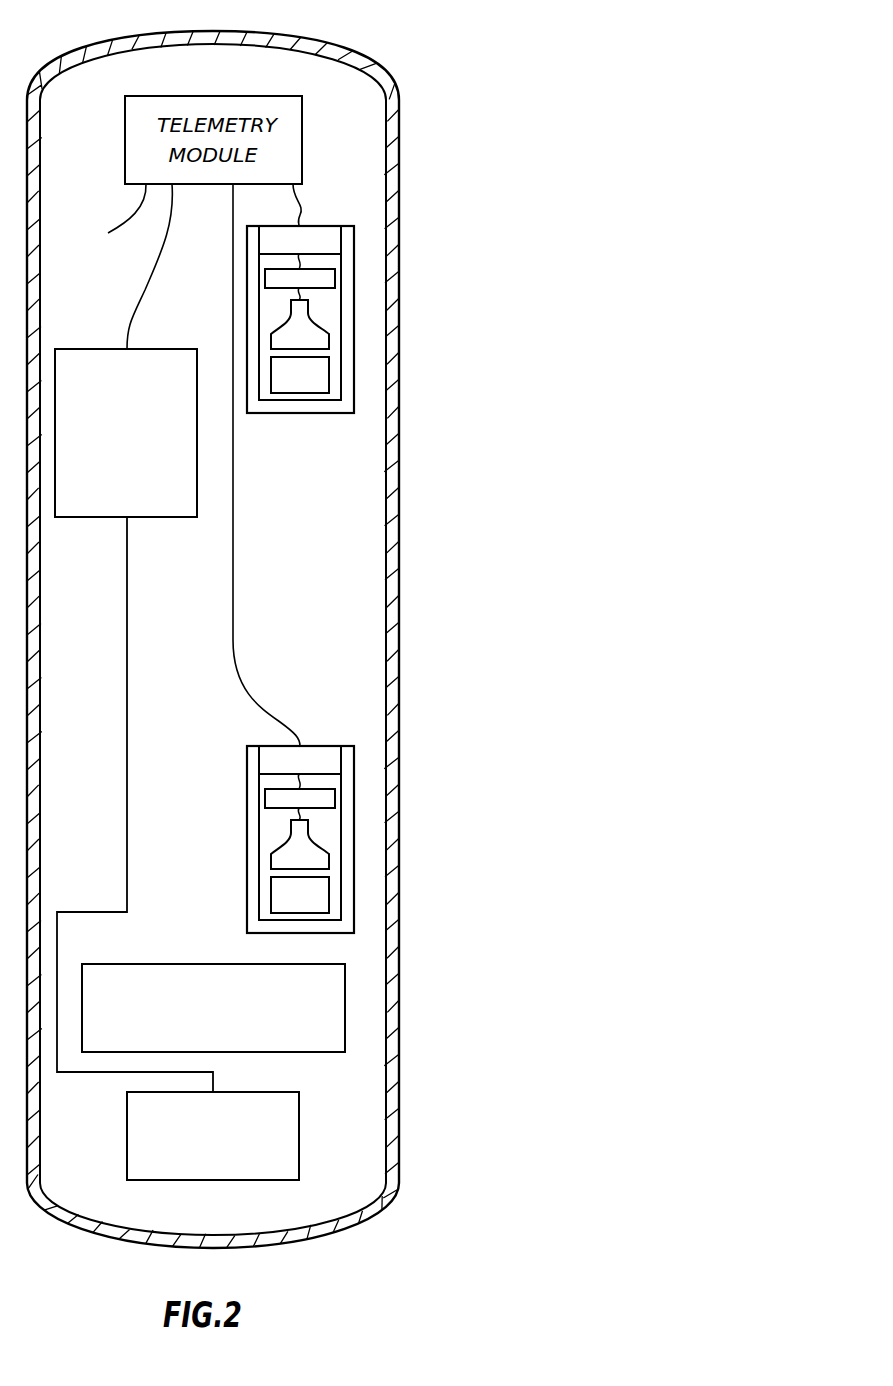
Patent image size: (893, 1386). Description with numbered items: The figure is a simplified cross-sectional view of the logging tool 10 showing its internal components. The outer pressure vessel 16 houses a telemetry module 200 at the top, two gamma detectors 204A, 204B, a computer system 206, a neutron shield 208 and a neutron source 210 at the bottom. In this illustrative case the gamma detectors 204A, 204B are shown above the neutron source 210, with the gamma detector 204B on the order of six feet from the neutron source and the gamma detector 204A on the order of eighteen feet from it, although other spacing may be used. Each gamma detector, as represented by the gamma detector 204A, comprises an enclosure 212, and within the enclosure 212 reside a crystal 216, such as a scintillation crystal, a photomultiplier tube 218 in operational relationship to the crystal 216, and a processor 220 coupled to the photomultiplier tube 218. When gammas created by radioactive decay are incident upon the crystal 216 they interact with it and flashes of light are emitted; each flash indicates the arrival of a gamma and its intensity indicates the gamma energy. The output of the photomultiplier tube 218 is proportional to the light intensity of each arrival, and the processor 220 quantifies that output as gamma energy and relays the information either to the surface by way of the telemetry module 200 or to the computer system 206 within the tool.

The logging tool 10 is at (522, 68).
The pressure vessel 16 is at (398, 232).
The telemetry module 200 is at (104, 221).
The gamma detector 204A is at (353, 320).
The gamma detector 204B is at (355, 832).
The computer system 206 is at (108, 478).
The neutron shield 208 is at (345, 988).
The neutron source 210 is at (299, 1127).
The enclosure 212 is at (347, 285).
The crystal 216 is at (330, 378).
The photomultiplier tube 218 is at (330, 342).
The processor 220 is at (270, 277).